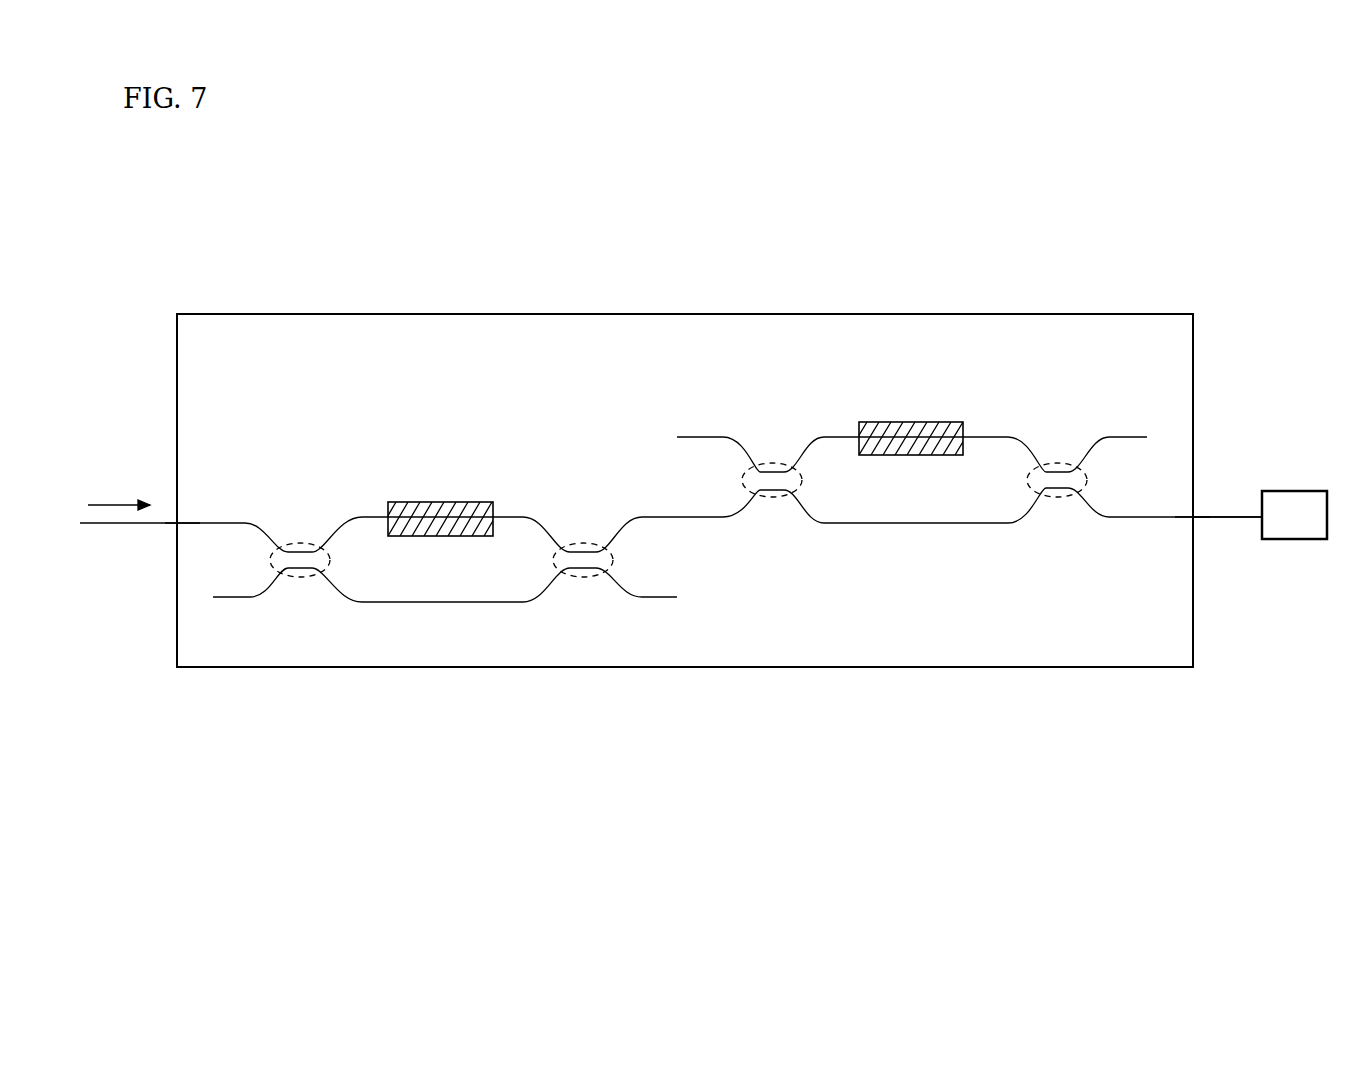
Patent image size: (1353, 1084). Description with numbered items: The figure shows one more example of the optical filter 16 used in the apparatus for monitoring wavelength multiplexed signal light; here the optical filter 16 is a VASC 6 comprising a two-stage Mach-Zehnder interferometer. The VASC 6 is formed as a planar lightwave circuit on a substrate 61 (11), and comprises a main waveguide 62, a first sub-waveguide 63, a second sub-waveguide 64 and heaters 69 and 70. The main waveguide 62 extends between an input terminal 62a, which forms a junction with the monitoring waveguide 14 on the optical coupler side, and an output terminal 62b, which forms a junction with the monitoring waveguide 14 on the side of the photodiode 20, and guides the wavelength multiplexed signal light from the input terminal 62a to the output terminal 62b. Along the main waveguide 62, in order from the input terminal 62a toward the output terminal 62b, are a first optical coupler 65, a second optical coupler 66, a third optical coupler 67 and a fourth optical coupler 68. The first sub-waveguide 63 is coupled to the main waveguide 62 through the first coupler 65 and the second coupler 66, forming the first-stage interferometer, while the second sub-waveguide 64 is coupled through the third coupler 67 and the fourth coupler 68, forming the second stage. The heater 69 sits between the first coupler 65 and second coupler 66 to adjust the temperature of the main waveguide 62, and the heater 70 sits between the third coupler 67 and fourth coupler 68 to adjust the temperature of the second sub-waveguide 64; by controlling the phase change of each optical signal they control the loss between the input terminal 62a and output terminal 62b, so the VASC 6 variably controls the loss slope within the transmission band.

The VASC 6 is at (708, 443).
The optical filter 16 is at (960, 309).
The substrate 61 is at (685, 443).
The substrate 11 is at (372, 314).
The monitoring waveguide 14 is at (120, 523).
The photodiode 20 is at (1298, 491).
The main waveguide 62 is at (656, 517).
The input terminal 62a is at (177, 523).
The output terminal 62b is at (1193, 517).
The first sub-waveguide 63 is at (478, 603).
The second sub-waveguide 64 is at (838, 437).
The first optical coupler 65 is at (298, 543).
The second optical coupler 66 is at (587, 543).
The third optical coupler 67 is at (770, 500).
The fourth optical coupler 68 is at (1055, 497).
The heater 69 is at (447, 502).
The heater 70 is at (926, 422).